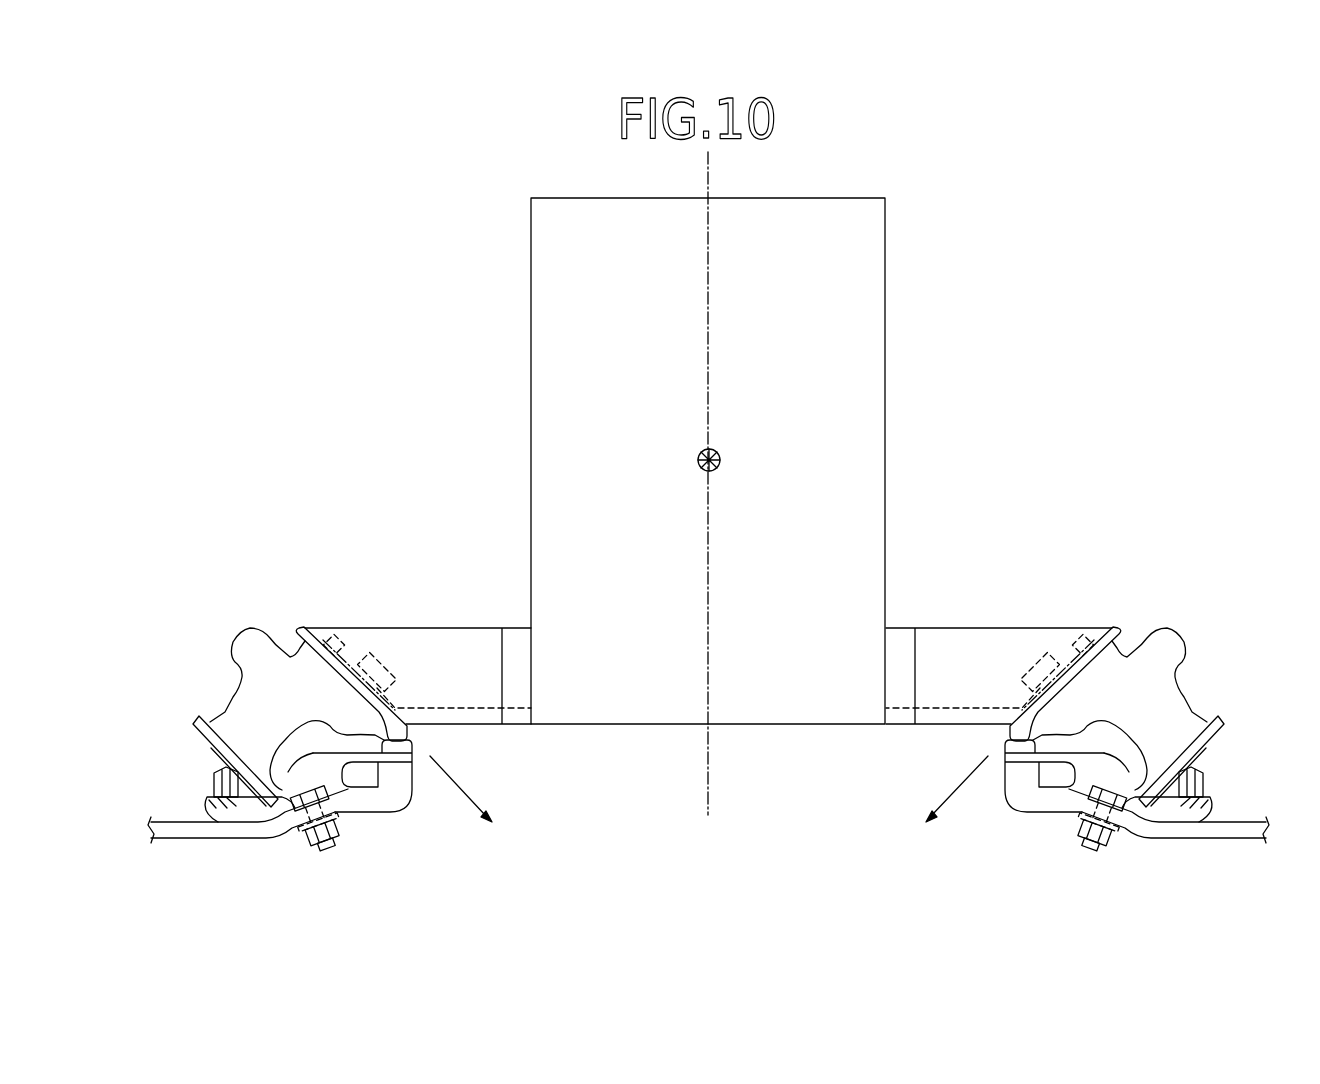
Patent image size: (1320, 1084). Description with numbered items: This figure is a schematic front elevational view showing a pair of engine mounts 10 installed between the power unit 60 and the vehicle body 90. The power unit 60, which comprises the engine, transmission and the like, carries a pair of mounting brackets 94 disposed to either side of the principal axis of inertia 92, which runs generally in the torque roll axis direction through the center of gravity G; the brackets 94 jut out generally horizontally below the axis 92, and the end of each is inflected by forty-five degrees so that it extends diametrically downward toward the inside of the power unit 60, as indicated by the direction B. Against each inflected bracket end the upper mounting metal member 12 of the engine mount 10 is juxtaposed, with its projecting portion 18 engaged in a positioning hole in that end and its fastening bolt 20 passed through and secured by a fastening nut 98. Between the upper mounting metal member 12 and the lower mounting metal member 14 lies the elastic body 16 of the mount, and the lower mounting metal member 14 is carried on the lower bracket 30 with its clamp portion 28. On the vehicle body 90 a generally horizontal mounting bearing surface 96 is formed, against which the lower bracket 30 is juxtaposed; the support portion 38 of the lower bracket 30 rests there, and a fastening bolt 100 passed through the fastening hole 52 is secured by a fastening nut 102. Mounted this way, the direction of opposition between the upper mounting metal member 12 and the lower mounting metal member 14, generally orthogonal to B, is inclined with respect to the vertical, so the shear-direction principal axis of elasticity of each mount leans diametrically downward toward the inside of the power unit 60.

The engine mount 10 is at (701, 727).
The upper mounting metal member 12 is at (349, 676).
The lower mounting metal member 14 is at (203, 741).
The elastic body 16 is at (245, 693).
The projecting portion 18 is at (334, 632).
The fastening bolt 20 is at (401, 657).
The bracket 28 is at (386, 796).
The lower bracket 30 is at (251, 838).
The support portion 38 is at (240, 812).
The fastening hole 52 is at (338, 832).
The power unit 60 is at (561, 298).
The vehicle body 90 is at (697, 828).
The principal axis of inertia 92 is at (732, 444).
The mounting bracket 94 is at (471, 650).
The mounting bearing surface 96 is at (186, 832).
The fastening nut 98 is at (372, 655).
The fastening bolt 100 is at (299, 800).
The fastening nut 102 is at (322, 862).
The center of gravity G is at (721, 459).
The direction B is at (709, 789).